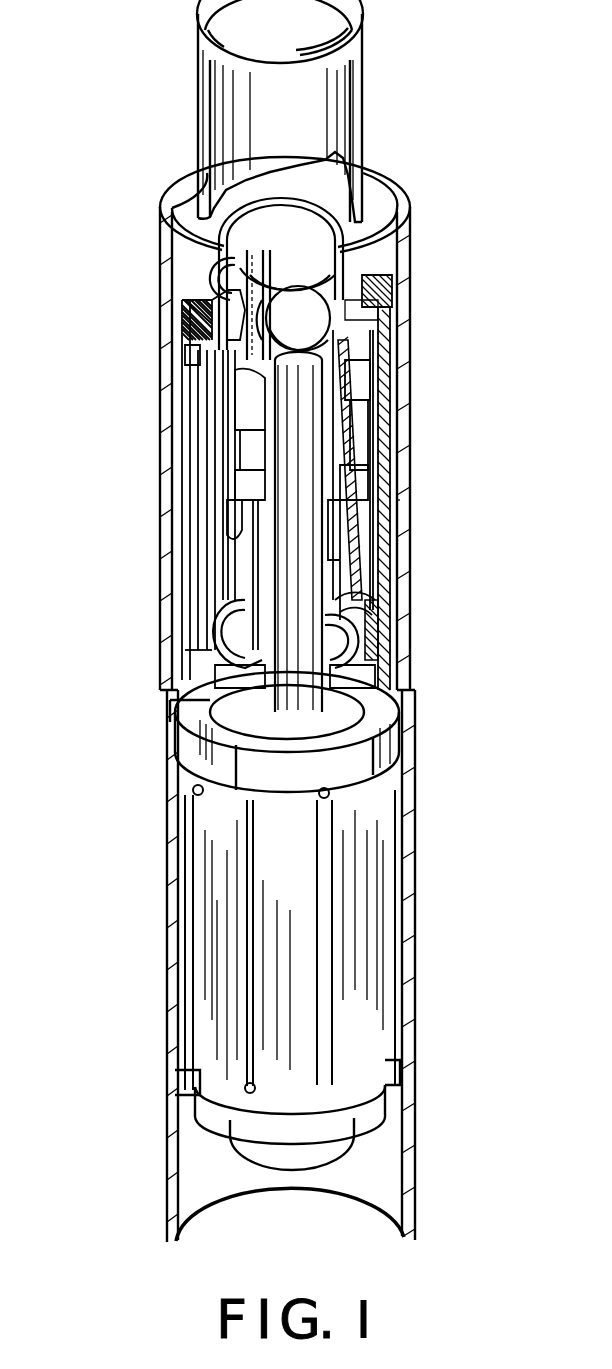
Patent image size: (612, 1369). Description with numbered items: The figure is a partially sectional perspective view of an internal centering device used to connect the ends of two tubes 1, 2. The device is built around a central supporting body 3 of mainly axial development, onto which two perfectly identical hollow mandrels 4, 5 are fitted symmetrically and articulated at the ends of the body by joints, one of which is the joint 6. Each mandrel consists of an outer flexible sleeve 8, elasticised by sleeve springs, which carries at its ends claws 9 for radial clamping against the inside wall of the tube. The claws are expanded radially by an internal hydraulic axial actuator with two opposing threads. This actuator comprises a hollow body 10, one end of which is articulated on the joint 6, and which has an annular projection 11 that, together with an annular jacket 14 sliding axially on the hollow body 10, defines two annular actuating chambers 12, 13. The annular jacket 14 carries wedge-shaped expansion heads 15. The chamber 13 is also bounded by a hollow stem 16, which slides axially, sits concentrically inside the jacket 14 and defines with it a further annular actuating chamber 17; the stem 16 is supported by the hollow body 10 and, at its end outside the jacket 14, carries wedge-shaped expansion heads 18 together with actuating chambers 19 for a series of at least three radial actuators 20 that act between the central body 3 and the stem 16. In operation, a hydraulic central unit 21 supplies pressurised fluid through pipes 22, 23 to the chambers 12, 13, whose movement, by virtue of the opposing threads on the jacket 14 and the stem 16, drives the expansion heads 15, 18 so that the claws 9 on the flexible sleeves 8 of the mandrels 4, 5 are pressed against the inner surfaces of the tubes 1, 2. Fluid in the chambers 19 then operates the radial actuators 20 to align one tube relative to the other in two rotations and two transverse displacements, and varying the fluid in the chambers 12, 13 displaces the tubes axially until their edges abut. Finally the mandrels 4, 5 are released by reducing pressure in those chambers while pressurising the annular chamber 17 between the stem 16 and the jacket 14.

The tube 1 is at (402, 182).
The tube 2 is at (408, 878).
The central supporting body 3 is at (272, 605).
The hollow mandrel 4 is at (398, 500).
The hollow mandrel 5 is at (230, 945).
The joint 6 is at (340, 318).
The outer flexible sleeve 8 is at (195, 510).
The claw 9 is at (190, 340).
The hollow body 10 is at (245, 440).
The annular projection 11 is at (235, 395).
The annular actuating chamber 12 is at (395, 353).
The annular actuating chamber 13 is at (395, 447).
The annular jacket 14 is at (215, 480).
The wedge-shaped expansion head 15 is at (205, 325).
The hollow stem 16 is at (240, 560).
The annular actuating chamber 17 is at (395, 535).
The wedge-shaped expansion head 18 is at (225, 650).
The actuating chamber 19 is at (395, 590).
The radial actuator 20 is at (255, 682).
The hydraulic central unit 21 is at (340, 105).
The pipe 22 is at (205, 262).
The pipe 23 is at (395, 238).